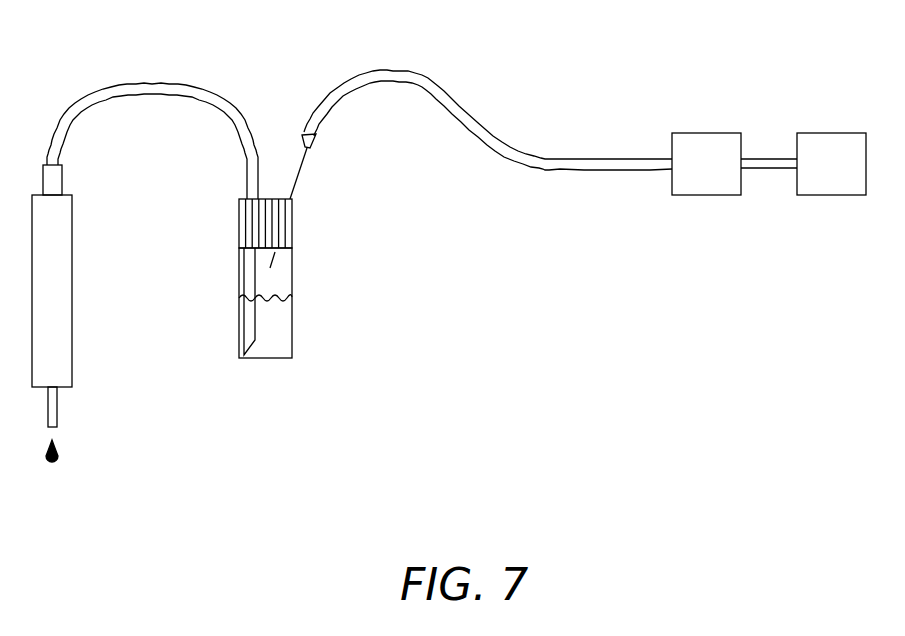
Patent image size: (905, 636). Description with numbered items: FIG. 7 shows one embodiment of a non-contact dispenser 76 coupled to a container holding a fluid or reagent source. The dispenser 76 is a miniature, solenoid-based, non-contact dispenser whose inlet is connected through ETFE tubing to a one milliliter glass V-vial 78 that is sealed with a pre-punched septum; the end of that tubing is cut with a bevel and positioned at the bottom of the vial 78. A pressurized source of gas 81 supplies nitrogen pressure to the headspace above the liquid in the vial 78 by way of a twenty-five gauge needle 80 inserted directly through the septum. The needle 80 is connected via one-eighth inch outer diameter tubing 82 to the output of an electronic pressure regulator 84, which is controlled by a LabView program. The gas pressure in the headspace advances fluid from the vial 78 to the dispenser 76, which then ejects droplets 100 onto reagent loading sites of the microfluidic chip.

The non-contact dispenser 76 is at (62, 313).
The droplet 100 is at (58, 447).
The glass V-vial 78 is at (292, 285).
The needle 80 is at (302, 173).
The tubing 82 is at (402, 70).
The electronic pressure regulator 84 is at (700, 133).
The pressurized source of gas 81 is at (838, 133).